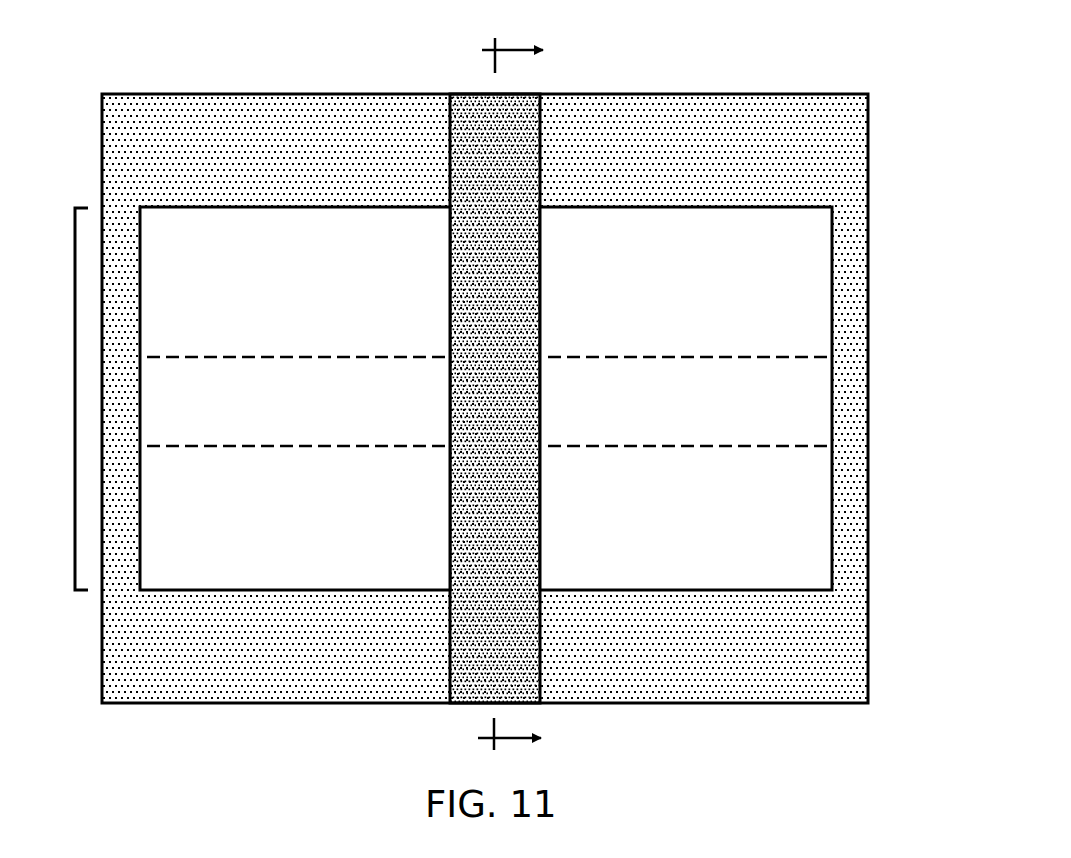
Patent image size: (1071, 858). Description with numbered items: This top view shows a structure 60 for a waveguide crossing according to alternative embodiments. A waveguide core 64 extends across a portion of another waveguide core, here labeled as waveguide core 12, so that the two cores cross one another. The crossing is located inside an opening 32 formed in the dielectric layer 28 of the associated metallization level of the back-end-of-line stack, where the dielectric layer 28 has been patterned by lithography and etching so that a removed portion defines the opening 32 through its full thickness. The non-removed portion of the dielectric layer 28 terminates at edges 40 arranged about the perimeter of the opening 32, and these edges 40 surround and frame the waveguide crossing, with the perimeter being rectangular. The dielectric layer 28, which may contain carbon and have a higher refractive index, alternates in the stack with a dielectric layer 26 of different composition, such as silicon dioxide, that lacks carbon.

The structure 60 is at (128, 67).
The waveguide core 12 is at (763, 285).
The dielectric layer 28 is at (802, 164).
The waveguide core 64 is at (475, 288).
The edges 40 is at (143, 516).
The dielectric layer 26 is at (770, 545).
The opening 32 is at (75, 401).